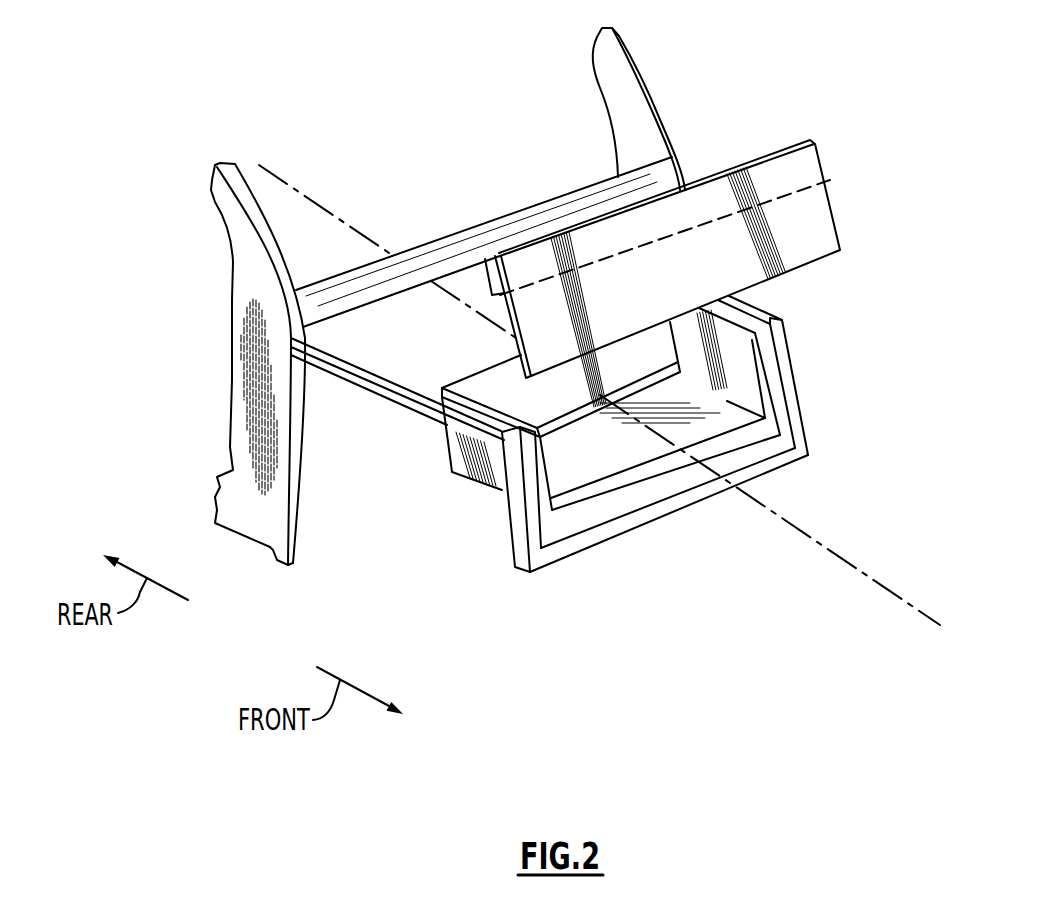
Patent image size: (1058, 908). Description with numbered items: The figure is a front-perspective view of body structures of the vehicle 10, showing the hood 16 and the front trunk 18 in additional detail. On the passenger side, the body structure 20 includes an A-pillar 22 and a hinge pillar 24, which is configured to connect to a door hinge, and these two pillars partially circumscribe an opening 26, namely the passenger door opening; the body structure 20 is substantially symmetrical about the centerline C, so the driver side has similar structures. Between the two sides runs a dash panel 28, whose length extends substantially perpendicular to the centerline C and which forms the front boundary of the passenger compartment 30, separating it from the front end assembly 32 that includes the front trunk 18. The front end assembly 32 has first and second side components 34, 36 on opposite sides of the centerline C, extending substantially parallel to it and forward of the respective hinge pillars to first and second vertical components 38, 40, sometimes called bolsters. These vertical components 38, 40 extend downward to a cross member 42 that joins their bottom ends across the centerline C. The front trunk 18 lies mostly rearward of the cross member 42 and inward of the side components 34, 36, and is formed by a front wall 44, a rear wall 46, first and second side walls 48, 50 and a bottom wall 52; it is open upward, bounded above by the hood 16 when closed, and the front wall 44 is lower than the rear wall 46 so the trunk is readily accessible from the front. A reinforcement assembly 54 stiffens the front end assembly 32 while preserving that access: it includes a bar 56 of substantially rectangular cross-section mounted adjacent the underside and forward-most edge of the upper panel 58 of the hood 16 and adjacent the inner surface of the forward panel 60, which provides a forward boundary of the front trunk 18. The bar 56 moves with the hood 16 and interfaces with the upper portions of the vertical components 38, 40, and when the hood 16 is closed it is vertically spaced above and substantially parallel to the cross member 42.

The vehicle 10 is at (820, 120).
The hood 16 is at (742, 160).
The front trunk 18 is at (745, 367).
The body structure 20 is at (150, 177).
The A-pillar 22 is at (242, 245).
The hinge pillar 24 is at (243, 407).
The opening 26 is at (195, 351).
The dash panel 28 is at (492, 233).
The passenger compartment 30 is at (365, 177).
The front end assembly 32 is at (425, 572).
The first side component 34 is at (390, 393).
The second side component 36 is at (757, 312).
The first vertical component 38 is at (510, 497).
The second vertical component 40 is at (788, 388).
The cross member 42 is at (622, 523).
The front wall 44 is at (658, 463).
The rear wall 46 is at (483, 380).
The first side wall 48 is at (542, 445).
The second side wall 50 is at (698, 353).
The bottom wall 52 is at (600, 435).
The reinforcement assembly 54 is at (461, 283).
The bar 56 is at (493, 292).
The upper panel 58 is at (686, 179).
The forward panel 60 is at (812, 230).
The centerline C is at (880, 582).